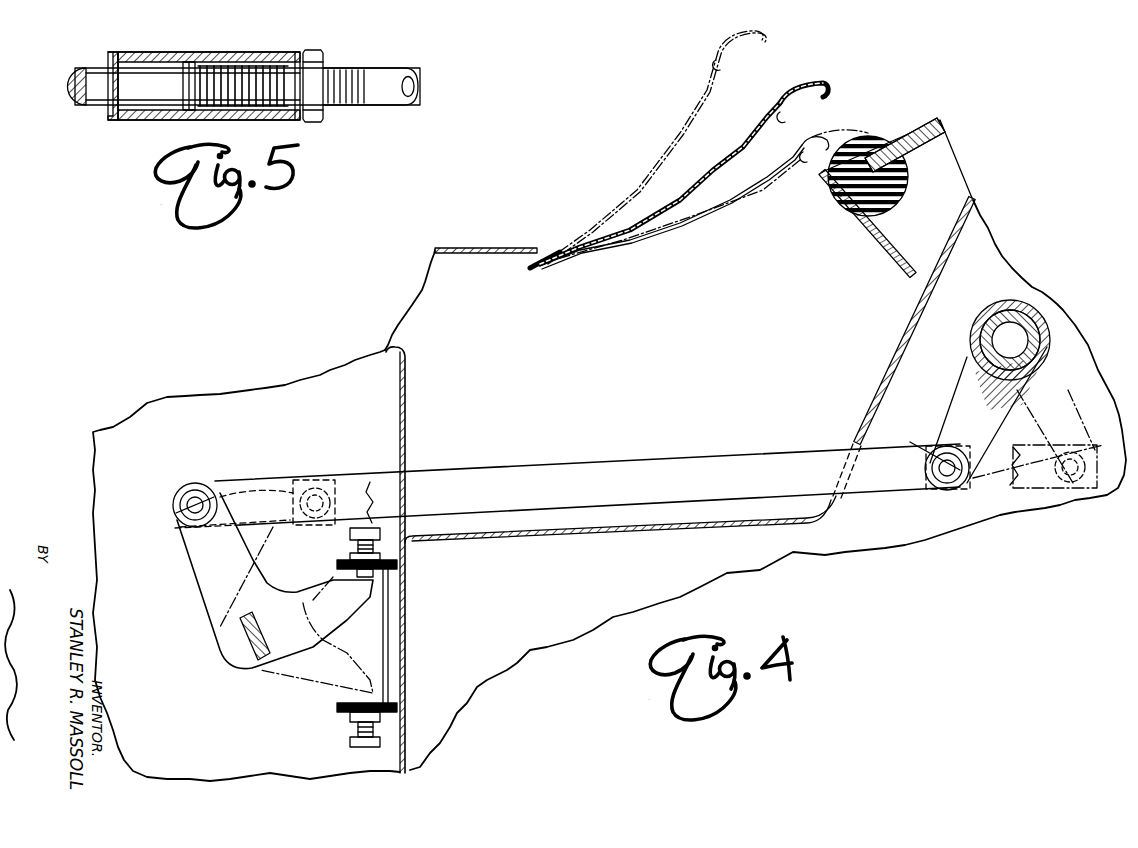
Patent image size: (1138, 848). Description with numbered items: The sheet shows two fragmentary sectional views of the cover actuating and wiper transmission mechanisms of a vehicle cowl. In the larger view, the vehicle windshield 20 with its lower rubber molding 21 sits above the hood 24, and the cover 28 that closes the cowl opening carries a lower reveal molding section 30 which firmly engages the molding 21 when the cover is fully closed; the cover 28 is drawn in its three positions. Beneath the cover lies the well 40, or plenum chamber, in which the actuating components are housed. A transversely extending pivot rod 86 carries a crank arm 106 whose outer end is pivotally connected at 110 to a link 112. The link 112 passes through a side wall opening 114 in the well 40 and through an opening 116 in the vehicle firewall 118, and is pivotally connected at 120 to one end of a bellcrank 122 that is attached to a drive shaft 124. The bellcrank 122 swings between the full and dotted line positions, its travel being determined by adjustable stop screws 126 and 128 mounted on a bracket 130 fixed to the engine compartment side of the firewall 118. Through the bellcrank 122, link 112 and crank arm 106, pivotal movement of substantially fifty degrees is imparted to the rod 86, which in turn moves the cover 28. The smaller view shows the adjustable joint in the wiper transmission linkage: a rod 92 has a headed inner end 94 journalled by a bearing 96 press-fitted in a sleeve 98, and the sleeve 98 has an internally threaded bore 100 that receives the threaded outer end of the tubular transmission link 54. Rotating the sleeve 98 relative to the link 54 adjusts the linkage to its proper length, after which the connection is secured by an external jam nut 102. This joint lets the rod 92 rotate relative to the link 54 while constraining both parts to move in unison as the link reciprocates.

In FIG. 4, the windshield 20 is at (895, 183).
In FIG. 4, the lower rubber molding 21 is at (905, 183).
In FIG. 4, the hood 24 is at (486, 250).
In FIG. 4, the cover 28 is at (678, 134).
In FIG. 4, the lower reveal molding section 30 is at (808, 84).
In FIG. 4, the well 40 is at (428, 303).
In FIG. 5, the second tubular transmission link 54 is at (372, 104).
In FIG. 4, the pivot rod 86 is at (985, 345).
In FIG. 5, the rod 92 is at (72, 88).
In FIG. 5, the headed inner end 94 is at (192, 64).
In FIG. 5, the bearing 96 is at (118, 55).
In FIG. 5, the sleeve 98 is at (236, 55).
In FIG. 5, the internally threaded bore 100 is at (222, 102).
In FIG. 5, the external jam nut 102 is at (314, 114).
In FIG. 4, the crank arm 106 is at (958, 392).
In FIG. 4, the pivotal connection 110 is at (948, 486).
In FIG. 4, the link 112 is at (778, 462).
In FIG. 4, the side wall opening 114 is at (855, 440).
In FIG. 4, the opening 116 is at (406, 440).
In FIG. 4, the firewall 118 is at (404, 366).
In FIG. 4, the pivotal connection 120 is at (196, 500).
In FIG. 4, the bellcrank 122 is at (203, 582).
In FIG. 4, the drive shaft 124 is at (248, 640).
In FIG. 4, the adjustable stop screw 126 is at (378, 522).
In FIG. 4, the adjustable stop screw 128 is at (350, 744).
In FIG. 4, the bracket 130 is at (390, 611).